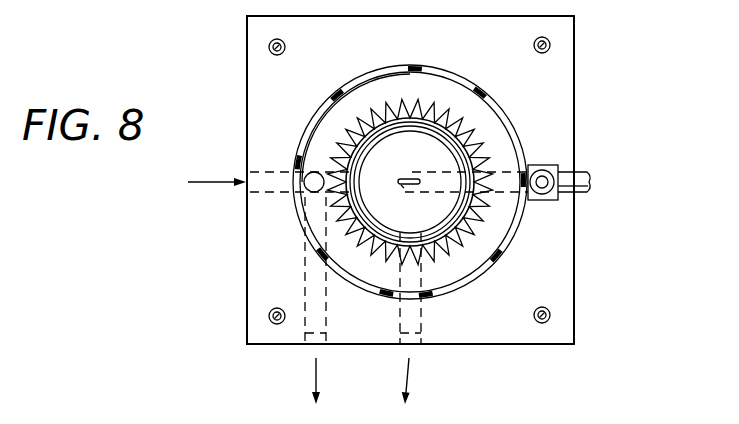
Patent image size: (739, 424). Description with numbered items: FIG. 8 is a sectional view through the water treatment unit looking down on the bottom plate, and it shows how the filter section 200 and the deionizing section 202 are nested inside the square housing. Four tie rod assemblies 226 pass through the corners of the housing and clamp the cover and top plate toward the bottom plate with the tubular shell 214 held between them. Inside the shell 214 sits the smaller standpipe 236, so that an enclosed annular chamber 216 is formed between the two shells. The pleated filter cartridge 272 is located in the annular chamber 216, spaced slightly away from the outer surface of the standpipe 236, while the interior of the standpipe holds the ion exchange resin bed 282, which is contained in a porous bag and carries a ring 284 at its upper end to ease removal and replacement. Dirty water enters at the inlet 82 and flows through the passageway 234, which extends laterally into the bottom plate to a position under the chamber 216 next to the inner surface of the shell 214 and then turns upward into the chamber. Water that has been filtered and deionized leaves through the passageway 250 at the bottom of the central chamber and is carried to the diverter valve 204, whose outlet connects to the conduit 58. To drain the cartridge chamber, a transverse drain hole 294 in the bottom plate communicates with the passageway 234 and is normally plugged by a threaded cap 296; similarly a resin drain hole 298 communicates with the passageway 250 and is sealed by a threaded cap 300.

The conduit 58 is at (584, 177).
The dirty water inlet 82 is at (246, 188).
The filter section 200 is at (472, 107).
The deionizing section 202 is at (434, 213).
The diverter valve 204 is at (545, 197).
The tubular sleeve or shell 214 is at (368, 72).
The annular chamber 216 is at (397, 82).
The tie rod assemblies 226 is at (268, 47).
The passageway 234 is at (275, 162).
The standpipe 236 is at (378, 238).
The passageway 250 is at (500, 170).
The filter cartridge 272 is at (428, 122).
The ion exchange resin bed 282 is at (388, 206).
The ring 284 is at (403, 178).
The drain hole 294 is at (312, 273).
The threaded cap 296 is at (311, 355).
The resin drain hole 298 is at (412, 315).
The threaded cap 300 is at (415, 345).